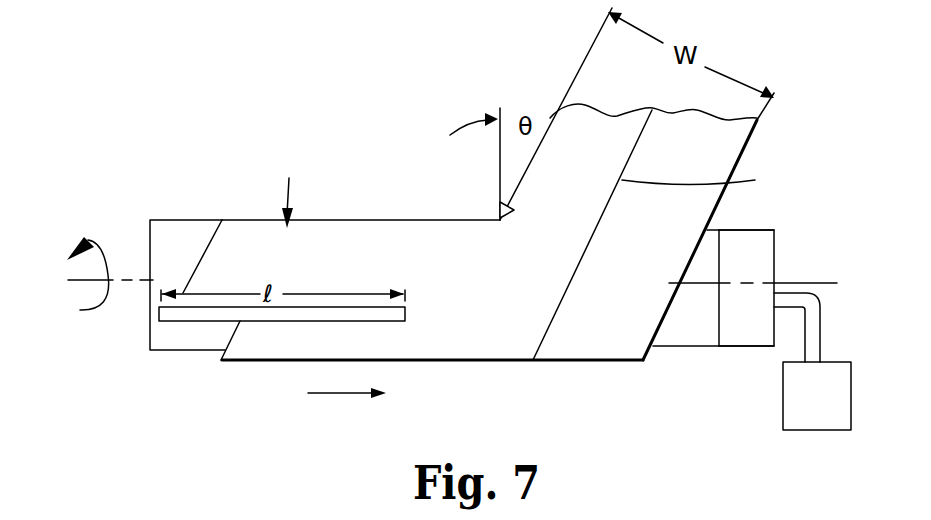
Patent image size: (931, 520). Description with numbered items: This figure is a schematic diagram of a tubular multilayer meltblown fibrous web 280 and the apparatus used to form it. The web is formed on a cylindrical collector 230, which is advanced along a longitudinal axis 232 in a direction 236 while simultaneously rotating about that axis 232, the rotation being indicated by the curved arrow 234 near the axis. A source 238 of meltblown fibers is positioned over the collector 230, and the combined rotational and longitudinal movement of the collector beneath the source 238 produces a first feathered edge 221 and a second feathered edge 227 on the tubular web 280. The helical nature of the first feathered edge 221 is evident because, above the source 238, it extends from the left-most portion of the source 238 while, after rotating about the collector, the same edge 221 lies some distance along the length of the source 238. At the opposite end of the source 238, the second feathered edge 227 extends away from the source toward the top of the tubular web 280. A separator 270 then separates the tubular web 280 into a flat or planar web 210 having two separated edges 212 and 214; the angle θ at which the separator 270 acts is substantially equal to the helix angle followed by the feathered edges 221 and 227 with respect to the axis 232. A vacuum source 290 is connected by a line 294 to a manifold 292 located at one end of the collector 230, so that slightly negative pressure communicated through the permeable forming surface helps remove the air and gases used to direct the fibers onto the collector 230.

The flat multilayer meltblown fibrous web 210 is at (587, 175).
The separated edge 212 is at (549, 118).
The separated edge 214 is at (751, 140).
The first feathered edge 221 is at (207, 247).
The second feathered edge 227 is at (712, 181).
The cylindrical collector 230 is at (163, 237).
The longitudinal axis 232 is at (79, 283).
The rotation direction 234 is at (103, 253).
The direction 236 is at (336, 394).
The source of meltblown fibers 238 is at (178, 323).
The separator 270 is at (500, 207).
The tubular multilayer meltblown fibrous web 280 is at (292, 189).
The vacuum source 290 is at (807, 412).
The manifold 292 is at (758, 252).
The line 294 is at (811, 332).